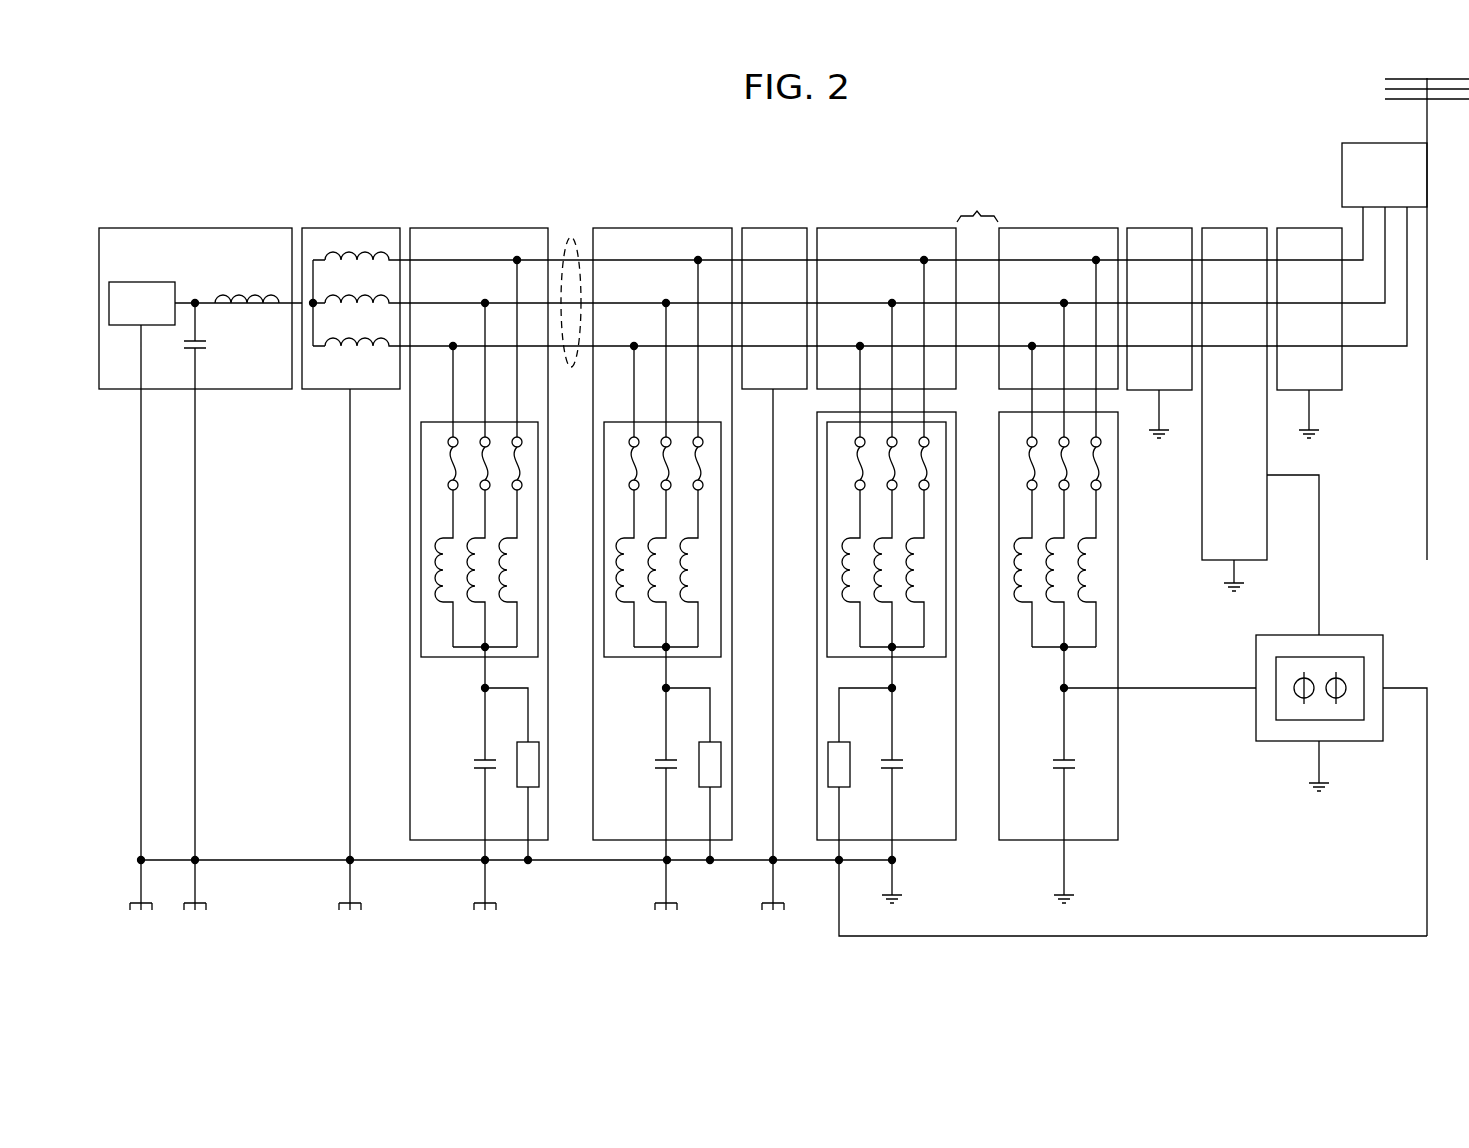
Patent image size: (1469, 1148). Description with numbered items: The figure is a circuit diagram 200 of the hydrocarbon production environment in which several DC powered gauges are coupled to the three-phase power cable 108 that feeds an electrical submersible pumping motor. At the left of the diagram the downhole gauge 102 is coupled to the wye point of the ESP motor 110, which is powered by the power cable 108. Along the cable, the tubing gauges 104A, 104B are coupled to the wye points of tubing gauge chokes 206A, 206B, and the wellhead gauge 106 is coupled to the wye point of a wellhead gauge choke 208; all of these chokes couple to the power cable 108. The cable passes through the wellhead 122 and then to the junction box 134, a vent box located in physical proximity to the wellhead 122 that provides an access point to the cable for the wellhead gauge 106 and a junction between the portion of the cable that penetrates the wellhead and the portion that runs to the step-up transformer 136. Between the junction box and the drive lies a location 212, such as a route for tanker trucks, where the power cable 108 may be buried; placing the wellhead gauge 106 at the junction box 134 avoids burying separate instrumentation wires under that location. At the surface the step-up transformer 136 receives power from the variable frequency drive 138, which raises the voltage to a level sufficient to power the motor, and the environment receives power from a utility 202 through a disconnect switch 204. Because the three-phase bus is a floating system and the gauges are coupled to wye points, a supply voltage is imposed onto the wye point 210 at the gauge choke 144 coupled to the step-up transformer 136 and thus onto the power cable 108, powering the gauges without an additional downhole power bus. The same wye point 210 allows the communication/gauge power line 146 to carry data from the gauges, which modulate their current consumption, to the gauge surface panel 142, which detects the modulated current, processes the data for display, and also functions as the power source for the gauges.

The circuit diagram 200 is at (257, 139).
The downhole gauge 102 is at (184, 222).
The ESP motor 110 is at (339, 222).
The tubing gauge 104A is at (479, 538).
The tubing gauge 104B is at (662, 538).
The three-phase power cable 108 is at (571, 236).
The wellhead 122 is at (785, 226).
The junction box 134 is at (899, 222).
The step-up transformer 136 is at (1070, 222).
The wellhead gauge 106 is at (1122, 674).
The gauge choke 144 is at (1059, 659).
The tubing gauge choke 206A is at (461, 664).
The tubing gauge choke 206B is at (644, 664).
The wellhead gauge choke 208 is at (915, 664).
The wye point 210 is at (1058, 652).
The location 212 is at (977, 200).
The variable frequency drive 138 is at (1245, 227).
The disconnect switch 204 is at (1345, 367).
The utility 202 is at (1380, 78).
The gauge surface panel 142 is at (1351, 750).
The communication/gauge power line 146 is at (1170, 690).